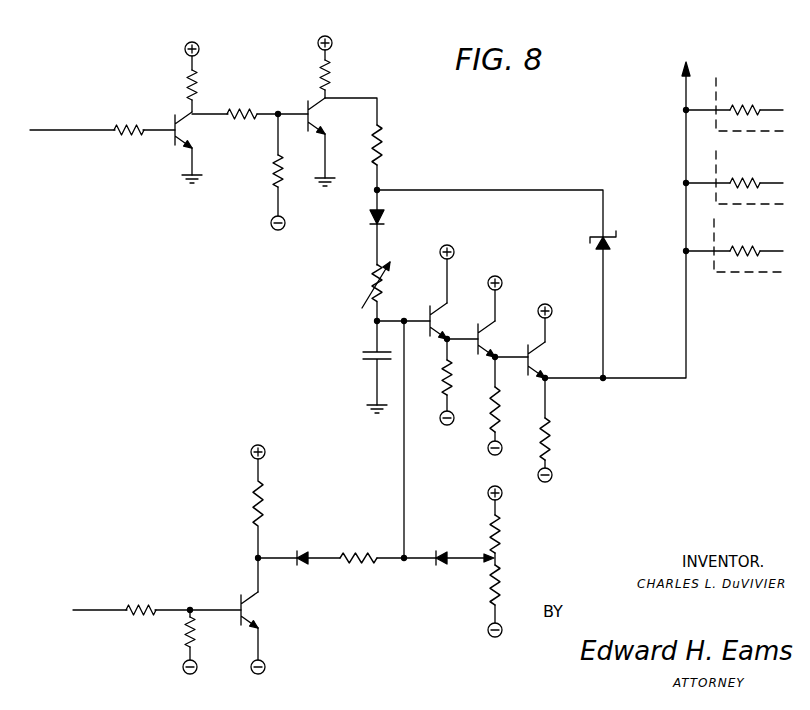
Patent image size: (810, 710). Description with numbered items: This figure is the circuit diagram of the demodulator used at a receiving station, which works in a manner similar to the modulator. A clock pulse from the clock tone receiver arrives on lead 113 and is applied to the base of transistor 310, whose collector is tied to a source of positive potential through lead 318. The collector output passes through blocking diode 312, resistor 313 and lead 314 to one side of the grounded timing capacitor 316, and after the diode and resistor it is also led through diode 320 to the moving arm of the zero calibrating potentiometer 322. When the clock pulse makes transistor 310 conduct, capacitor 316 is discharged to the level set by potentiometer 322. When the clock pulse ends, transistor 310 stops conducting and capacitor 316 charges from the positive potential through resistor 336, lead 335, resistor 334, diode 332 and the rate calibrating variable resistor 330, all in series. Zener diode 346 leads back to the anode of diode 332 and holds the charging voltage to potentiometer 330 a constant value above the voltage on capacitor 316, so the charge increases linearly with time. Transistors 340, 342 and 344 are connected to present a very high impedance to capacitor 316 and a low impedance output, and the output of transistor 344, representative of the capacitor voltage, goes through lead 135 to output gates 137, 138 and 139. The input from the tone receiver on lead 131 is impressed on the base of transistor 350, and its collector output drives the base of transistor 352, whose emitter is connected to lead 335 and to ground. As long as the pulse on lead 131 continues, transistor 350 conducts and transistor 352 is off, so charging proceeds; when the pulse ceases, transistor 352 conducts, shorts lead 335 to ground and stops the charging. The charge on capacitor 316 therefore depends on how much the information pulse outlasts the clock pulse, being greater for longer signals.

The lead 131 is at (88, 100).
The transistor 350 is at (177, 100).
The transistor 352 is at (306, 103).
The resistor 336 is at (333, 74).
The lead 335 is at (383, 105).
The resistor 334 is at (385, 155).
The diode 332 is at (370, 214).
The variable resistor 330 is at (384, 290).
The timing capacitor 316 is at (366, 362).
The lead 314 is at (405, 475).
The transistor 340 is at (433, 321).
The transistor 342 is at (481, 343).
The transistor 344 is at (531, 366).
The zener diode 346 is at (616, 243).
The lead 135 is at (643, 381).
The output gate 137 is at (700, 110).
The output gate 138 is at (700, 183).
The output gate 139 is at (700, 251).
The lead 318 is at (255, 510).
The transistor 310 is at (238, 603).
The lead 113 is at (88, 612).
The blocking diode 312 is at (299, 566).
The resistor 313 is at (376, 530).
The diode 320 is at (440, 563).
The zero calibrating potentiometer 322 is at (499, 553).